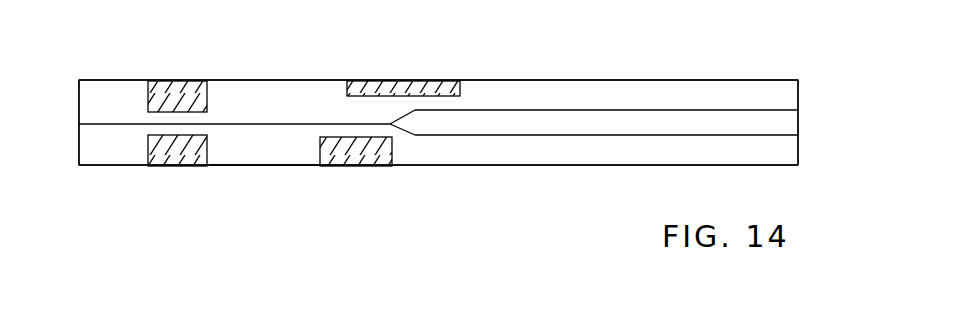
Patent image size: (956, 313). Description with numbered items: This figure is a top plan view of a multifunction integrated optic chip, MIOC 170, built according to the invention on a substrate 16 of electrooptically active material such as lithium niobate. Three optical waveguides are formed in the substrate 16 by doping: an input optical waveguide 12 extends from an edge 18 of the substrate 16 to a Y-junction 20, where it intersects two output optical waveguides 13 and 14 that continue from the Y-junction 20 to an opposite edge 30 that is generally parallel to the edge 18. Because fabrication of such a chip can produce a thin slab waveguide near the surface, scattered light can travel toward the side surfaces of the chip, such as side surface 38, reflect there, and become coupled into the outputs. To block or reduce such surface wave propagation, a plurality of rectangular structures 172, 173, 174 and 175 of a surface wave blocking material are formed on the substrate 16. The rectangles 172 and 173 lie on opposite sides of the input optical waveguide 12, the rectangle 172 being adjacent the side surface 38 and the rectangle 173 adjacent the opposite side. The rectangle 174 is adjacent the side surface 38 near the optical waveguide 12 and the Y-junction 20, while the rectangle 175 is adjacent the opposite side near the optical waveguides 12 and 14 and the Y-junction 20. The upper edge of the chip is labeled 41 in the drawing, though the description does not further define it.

The optical waveguide 12 is at (245, 124).
The optical waveguide 13 is at (505, 140).
The optical waveguide 14 is at (560, 112).
The substrate 16 is at (295, 168).
The edge 18 is at (79, 153).
The Y-junction 20 is at (400, 138).
The edge 30 is at (798, 150).
The side surface 38 is at (247, 167).
The top surface 41 is at (280, 80).
The MIOC 170 is at (532, 185).
The rectangular structure 172 is at (160, 167).
The rectangular structure 173 is at (165, 80).
The rectangular structure 174 is at (380, 167).
The rectangular structure 175 is at (385, 80).